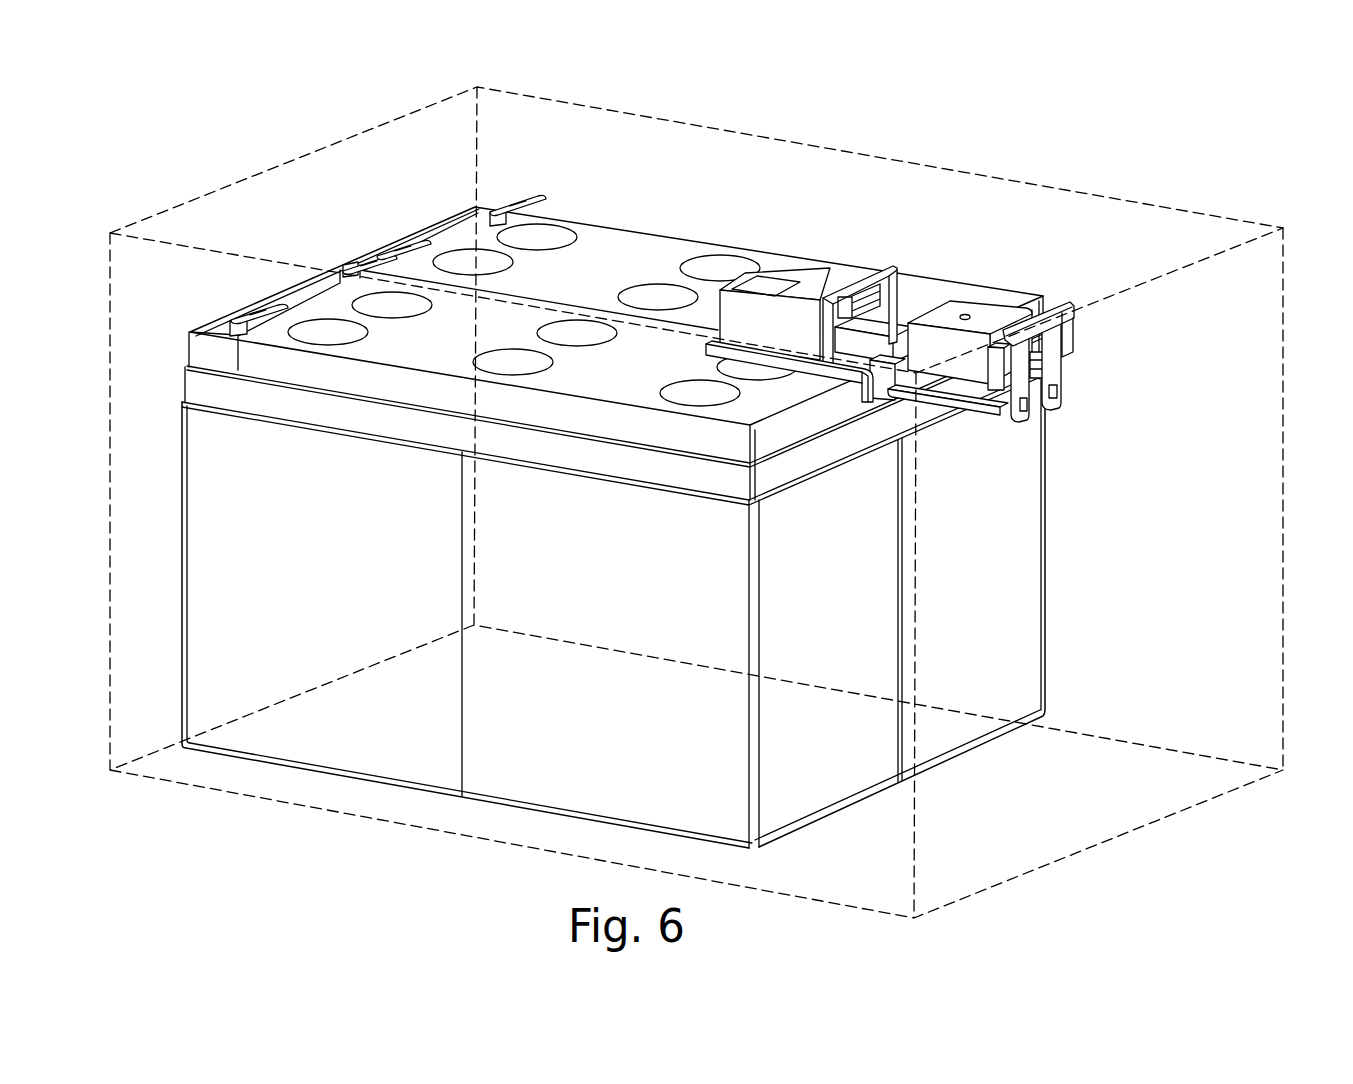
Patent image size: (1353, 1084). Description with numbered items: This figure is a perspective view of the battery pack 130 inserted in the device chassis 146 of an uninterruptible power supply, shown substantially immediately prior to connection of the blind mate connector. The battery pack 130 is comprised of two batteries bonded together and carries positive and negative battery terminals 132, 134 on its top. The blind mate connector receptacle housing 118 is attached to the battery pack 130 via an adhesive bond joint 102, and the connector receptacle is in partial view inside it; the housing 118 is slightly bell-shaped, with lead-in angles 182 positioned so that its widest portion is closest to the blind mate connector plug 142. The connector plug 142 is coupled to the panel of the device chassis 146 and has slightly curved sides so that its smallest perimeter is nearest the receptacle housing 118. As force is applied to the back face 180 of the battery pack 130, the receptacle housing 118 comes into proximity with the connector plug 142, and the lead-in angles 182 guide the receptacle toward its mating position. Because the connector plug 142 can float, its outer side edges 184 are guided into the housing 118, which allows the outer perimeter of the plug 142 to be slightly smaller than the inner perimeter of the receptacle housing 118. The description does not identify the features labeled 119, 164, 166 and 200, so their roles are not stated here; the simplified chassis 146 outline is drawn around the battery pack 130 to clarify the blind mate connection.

The adhesive bond joint 102 is at (820, 375).
The blind mate connector receptacle housing 118 is at (832, 268).
The terminal base 119 is at (880, 392).
The battery pack 130 is at (150, 466).
The positive battery terminal 132 is at (362, 247).
The negative battery terminal 134 is at (243, 305).
The blind mate connector plug 142 is at (987, 325).
The device chassis 146 is at (1284, 300).
The connector clip 164 is at (1060, 380).
The connector slots 166 is at (868, 300).
The back face 180 is at (178, 538).
The lead-in angles 182 is at (885, 292).
The outer side edges 184 is at (968, 372).
The enclosure volume 200 is at (724, 486).